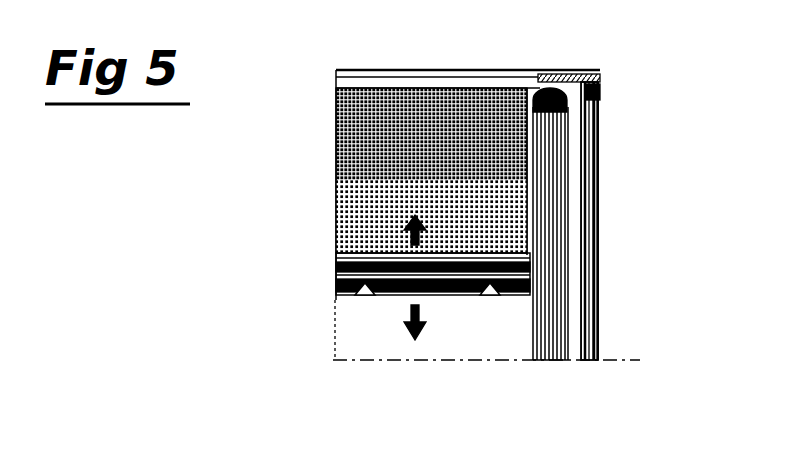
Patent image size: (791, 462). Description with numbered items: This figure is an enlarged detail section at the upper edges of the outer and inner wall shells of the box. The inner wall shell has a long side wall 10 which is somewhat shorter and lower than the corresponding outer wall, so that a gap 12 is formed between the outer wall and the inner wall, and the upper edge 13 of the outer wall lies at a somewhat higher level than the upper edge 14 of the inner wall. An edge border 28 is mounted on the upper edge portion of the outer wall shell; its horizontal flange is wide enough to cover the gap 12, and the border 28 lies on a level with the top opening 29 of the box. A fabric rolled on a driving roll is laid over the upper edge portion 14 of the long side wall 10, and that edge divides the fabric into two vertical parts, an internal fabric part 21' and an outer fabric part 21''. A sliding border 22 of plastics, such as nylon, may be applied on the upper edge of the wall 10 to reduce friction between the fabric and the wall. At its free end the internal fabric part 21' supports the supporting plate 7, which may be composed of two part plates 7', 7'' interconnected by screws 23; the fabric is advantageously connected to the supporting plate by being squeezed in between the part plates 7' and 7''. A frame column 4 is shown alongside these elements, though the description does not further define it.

The frame column 4 is at (590, 315).
The supporting plate 7 is at (433, 306).
The part plate 7' is at (393, 306).
The part plate 7'' is at (398, 247).
The long side wall 10 is at (548, 337).
The gap 12 is at (572, 256).
The upper edge of the outer wall 13 is at (600, 89).
The upper edge of the inner wall 14 is at (540, 125).
The internal fabric part 21' is at (502, 233).
The external fabric part 21'' is at (627, 233).
The sliding border 22 is at (541, 92).
The screws 23 is at (490, 297).
The edge border 28 is at (572, 75).
The top opening 29 is at (369, 72).